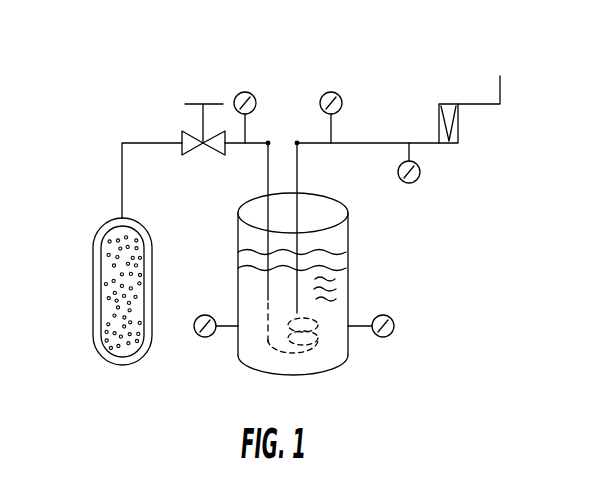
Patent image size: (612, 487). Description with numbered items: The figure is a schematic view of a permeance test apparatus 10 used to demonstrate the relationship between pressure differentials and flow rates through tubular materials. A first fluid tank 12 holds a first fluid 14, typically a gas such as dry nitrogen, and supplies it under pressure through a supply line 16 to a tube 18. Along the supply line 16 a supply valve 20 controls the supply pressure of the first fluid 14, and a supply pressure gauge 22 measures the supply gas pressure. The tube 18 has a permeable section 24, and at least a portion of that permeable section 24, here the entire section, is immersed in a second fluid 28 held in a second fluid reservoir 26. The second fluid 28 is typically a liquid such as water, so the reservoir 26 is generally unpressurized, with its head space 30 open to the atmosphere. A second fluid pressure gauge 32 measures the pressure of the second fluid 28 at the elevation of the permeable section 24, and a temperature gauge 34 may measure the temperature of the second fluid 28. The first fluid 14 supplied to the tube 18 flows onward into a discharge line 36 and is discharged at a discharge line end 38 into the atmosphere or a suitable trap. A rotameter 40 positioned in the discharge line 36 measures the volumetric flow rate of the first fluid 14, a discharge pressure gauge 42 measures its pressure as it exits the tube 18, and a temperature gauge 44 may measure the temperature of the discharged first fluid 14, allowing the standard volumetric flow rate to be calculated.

The test apparatus 10 is at (474, 254).
The first fluid tank 12 is at (97, 240).
The first fluid 14 is at (110, 305).
The supply line 16 is at (122, 162).
The tube 18 is at (268, 178).
The supply valve 20 is at (195, 103).
The supply pressure gauge 22 is at (253, 95).
The permeable section 24 is at (268, 325).
The second fluid reservoir 26 is at (335, 370).
The second fluid 28 is at (328, 297).
The head space 30 is at (248, 240).
The second fluid pressure gauge 32 is at (395, 322).
The temperature gauge 34 is at (203, 316).
The discharge line 36 is at (360, 143).
The discharge line end 38 is at (500, 76).
The rotameter 40 is at (459, 118).
The discharge pressure gauge 42 is at (338, 94).
The temperature gauge 44 is at (420, 172).